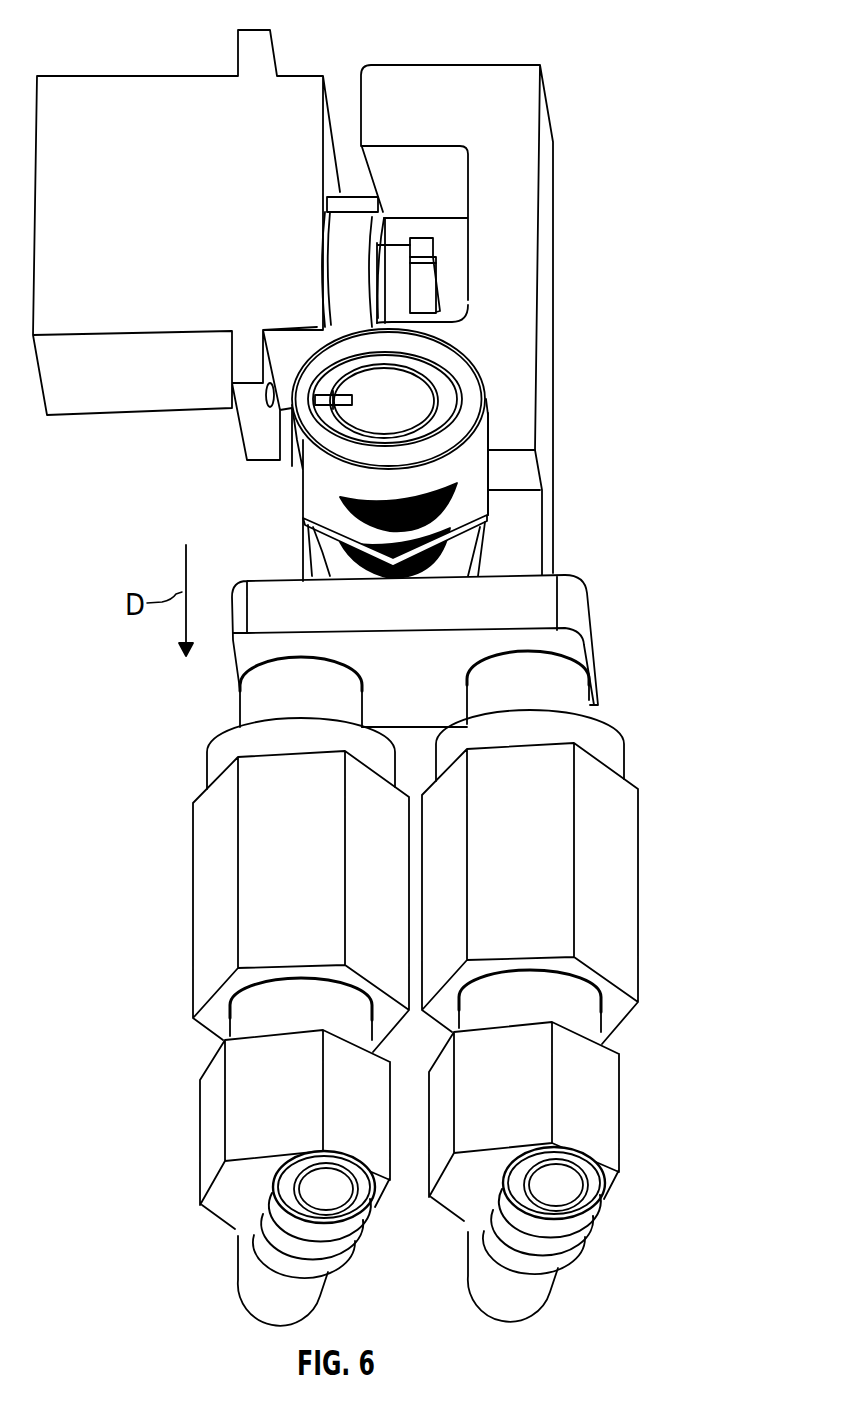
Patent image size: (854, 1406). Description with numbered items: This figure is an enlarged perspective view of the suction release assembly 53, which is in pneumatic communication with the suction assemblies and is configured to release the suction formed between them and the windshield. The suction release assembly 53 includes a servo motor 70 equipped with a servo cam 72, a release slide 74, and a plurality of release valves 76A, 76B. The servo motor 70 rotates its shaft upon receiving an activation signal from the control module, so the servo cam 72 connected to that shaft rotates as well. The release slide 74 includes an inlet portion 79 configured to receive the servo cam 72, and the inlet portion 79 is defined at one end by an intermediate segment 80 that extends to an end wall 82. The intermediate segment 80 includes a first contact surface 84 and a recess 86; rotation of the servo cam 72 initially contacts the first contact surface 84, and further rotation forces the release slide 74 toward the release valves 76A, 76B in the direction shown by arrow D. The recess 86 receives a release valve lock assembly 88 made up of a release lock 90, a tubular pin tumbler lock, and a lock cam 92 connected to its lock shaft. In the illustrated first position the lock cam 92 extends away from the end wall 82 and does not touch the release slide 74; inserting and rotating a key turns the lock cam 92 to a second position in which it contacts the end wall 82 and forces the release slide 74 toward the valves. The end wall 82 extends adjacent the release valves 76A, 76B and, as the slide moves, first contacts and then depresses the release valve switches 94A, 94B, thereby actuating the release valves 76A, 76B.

The suction release assembly 53 is at (608, 28).
The servo motor 70 is at (137, 77).
The servo cam 72 is at (427, 252).
The release slide 74 is at (527, 260).
The release valve 76A is at (206, 862).
The release valve 76B is at (622, 853).
The inlet portion 79 is at (447, 230).
The intermediate segment 80 is at (627, 255).
The end wall 82 is at (577, 613).
The first contact surface 84 is at (440, 314).
The recess 86 is at (520, 555).
The release valve lock assembly 88 is at (330, 447).
The release lock 90 is at (392, 463).
The lock cam 92 is at (313, 547).
The release valve switch 94A is at (262, 693).
The release valve switch 94B is at (567, 692).